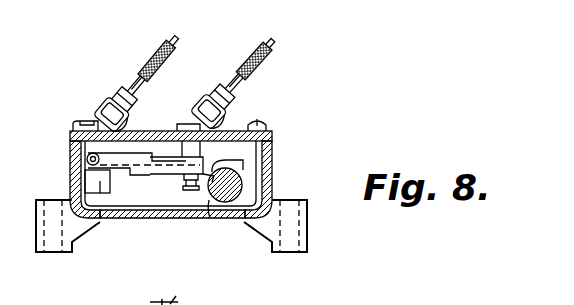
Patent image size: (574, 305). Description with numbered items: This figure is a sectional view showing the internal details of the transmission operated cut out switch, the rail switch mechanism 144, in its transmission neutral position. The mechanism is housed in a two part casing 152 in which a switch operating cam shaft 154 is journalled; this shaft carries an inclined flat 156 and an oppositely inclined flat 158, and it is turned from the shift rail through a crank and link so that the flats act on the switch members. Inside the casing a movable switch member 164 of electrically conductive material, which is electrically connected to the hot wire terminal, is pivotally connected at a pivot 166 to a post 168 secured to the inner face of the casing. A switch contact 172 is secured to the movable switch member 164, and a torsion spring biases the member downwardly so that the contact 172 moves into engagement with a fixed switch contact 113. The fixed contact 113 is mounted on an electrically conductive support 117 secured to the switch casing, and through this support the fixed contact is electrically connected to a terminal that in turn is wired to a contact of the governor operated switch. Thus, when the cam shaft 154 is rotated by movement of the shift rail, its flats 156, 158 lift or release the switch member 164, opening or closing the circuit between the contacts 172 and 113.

The fixed switch contact 113 is at (190, 192).
The electrically conductive support 117 is at (210, 202).
The rail switch mechanism 144 is at (290, 106).
The two part casing 152 is at (158, 216).
The switch operating cam shaft 154 is at (232, 188).
The inclined flat 156 is at (242, 177).
The oppositely inclined flat 158 is at (243, 163).
The movable switch member 164 is at (137, 152).
The pivot 166 is at (86, 162).
The post 168 is at (100, 194).
The switch contact 172 is at (184, 181).